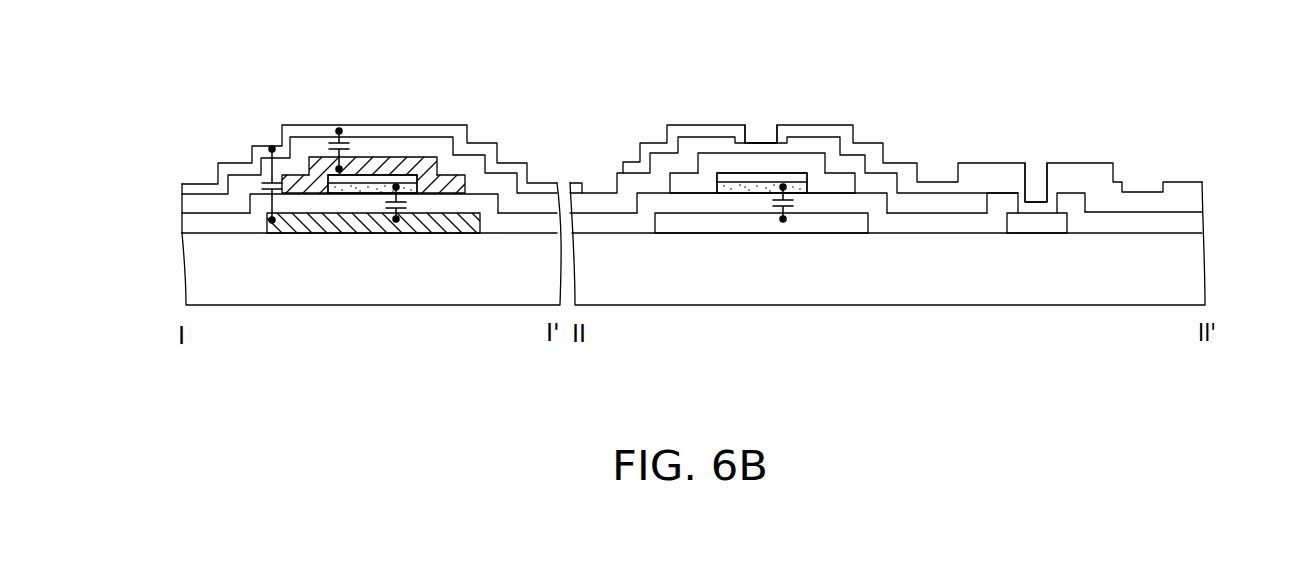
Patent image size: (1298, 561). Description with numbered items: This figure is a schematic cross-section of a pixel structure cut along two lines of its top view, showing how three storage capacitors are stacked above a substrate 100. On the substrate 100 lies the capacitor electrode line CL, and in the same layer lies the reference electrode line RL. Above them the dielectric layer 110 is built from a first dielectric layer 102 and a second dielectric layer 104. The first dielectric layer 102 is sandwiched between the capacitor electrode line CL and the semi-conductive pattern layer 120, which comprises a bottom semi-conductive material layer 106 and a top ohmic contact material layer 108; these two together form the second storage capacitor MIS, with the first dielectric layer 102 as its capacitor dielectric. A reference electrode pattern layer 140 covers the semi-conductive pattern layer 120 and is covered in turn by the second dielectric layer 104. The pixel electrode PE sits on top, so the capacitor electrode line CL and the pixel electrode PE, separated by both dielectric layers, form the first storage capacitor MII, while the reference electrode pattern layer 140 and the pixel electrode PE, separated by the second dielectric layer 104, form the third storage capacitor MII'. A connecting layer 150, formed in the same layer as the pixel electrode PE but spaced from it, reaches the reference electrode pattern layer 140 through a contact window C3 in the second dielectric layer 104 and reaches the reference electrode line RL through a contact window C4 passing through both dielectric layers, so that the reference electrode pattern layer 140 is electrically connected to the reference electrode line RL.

The substrate 100 is at (1190, 268).
The first dielectric layer 102 is at (186, 223).
The second dielectric layer 104 is at (200, 203).
The bottom semi-conductive material layer 106 is at (452, 175).
The top ohmic contact material layer 108 is at (405, 180).
The dielectric layer 110 is at (217, 90).
The semi-conductive pattern layer 120 is at (495, 62).
The reference electrode pattern layer 140 is at (365, 157).
The connecting layer 150 is at (822, 128).
The pixel electrode PE is at (547, 188).
The capacitor electrode line CL is at (455, 222).
The reference electrode line RL is at (1037, 222).
The contact window C3 is at (735, 142).
The contact window C4 is at (1028, 168).
The first storage capacitor MII is at (276, 253).
The third storage capacitor MII' is at (319, 123).
The second storage capacitor MIS is at (405, 207).